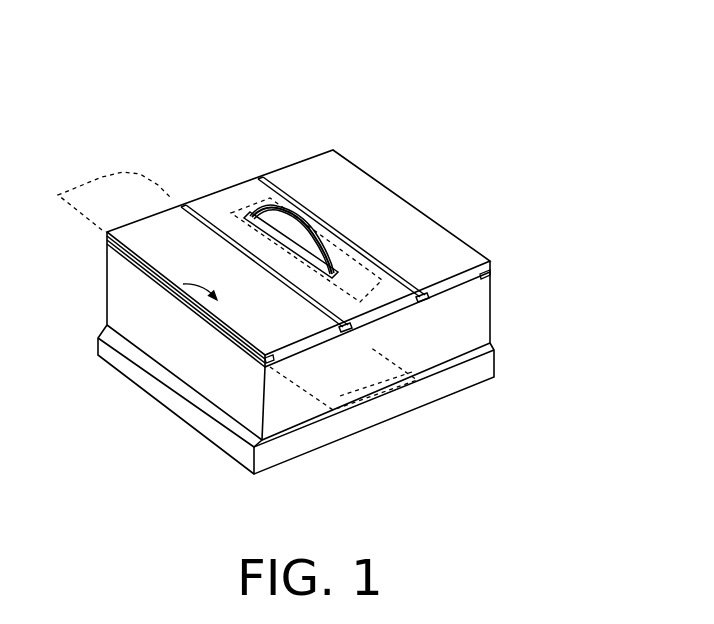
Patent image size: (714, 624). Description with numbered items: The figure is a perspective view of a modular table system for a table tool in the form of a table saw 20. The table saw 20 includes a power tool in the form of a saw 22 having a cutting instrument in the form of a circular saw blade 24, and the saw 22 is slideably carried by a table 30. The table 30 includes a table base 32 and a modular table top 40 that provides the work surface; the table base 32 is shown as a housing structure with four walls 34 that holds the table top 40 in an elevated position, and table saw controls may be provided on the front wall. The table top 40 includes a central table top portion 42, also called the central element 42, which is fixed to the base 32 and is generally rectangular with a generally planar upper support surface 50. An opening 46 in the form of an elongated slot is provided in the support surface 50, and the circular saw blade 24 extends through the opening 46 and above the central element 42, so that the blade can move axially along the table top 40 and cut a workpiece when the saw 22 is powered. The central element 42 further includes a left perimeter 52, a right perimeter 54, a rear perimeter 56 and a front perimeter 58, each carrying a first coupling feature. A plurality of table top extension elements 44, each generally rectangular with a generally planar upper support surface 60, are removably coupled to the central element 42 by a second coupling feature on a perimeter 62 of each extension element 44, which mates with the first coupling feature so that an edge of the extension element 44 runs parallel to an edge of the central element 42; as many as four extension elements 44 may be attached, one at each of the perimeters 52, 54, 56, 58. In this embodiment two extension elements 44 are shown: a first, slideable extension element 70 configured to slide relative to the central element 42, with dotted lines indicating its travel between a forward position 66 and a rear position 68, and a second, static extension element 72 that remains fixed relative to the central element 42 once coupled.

The table saw 20 is at (447, 107).
The saw 22 is at (372, 284).
The circular saw blade 24 is at (358, 243).
The table 30 is at (173, 322).
The table base 32 is at (197, 383).
The walls 34 is at (490, 377).
The modular table top 40 is at (425, 372).
The central table top portion 42 is at (247, 193).
The table top extension elements 44 is at (152, 220).
The opening 46 is at (487, 279).
The upper support surface 50 is at (221, 207).
The left perimeter 52 is at (110, 252).
The right perimeter 54 is at (405, 250).
The rear perimeter 56 is at (197, 200).
The front perimeter 58 is at (365, 325).
The upper support surface 60 is at (410, 282).
The perimeter 62 is at (287, 188).
The forward position 66 is at (383, 400).
The rear position 68 is at (100, 177).
The slideable extension element 70 is at (160, 267).
The static extension element 72 is at (464, 252).